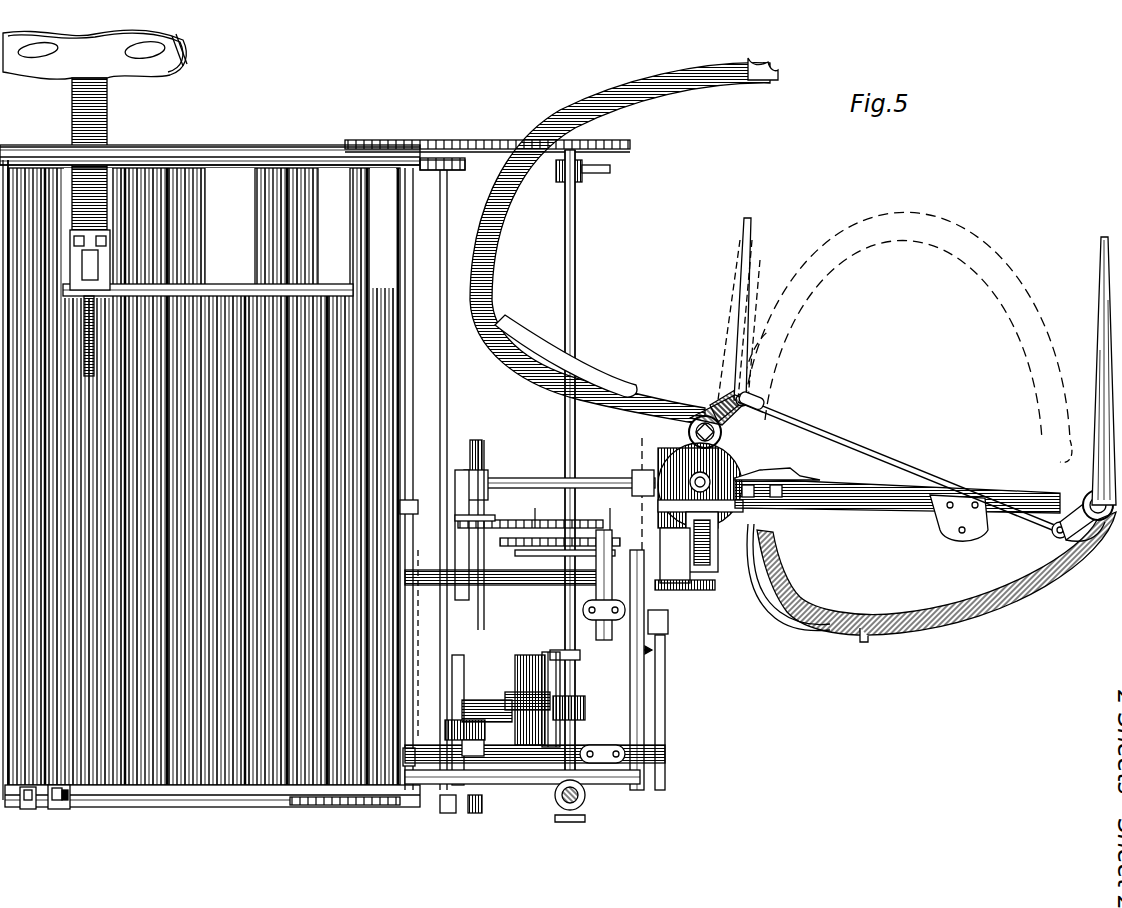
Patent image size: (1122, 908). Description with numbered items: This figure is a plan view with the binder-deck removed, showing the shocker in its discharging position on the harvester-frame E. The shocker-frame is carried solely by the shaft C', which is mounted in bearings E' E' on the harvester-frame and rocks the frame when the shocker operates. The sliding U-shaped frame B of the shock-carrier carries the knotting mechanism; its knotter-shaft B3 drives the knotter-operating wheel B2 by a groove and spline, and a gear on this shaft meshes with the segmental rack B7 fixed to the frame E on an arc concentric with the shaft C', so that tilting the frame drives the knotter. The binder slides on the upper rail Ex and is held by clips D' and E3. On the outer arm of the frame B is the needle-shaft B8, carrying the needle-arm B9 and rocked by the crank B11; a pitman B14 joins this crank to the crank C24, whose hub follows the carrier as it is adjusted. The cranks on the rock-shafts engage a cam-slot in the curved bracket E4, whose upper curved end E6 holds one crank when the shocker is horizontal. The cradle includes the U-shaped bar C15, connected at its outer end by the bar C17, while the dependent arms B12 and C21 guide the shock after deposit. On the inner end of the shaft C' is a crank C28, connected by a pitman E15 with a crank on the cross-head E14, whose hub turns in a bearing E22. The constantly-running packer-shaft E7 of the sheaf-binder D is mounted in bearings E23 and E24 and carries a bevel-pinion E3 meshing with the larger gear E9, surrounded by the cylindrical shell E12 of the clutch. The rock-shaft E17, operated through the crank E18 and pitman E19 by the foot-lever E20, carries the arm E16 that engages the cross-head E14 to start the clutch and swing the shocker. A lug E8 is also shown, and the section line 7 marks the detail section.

The rock-shaft E17 is at (242, 800).
The bell-crank lever E20 is at (100, 228).
The pitman E19 is at (40, 792).
The crank E18 is at (64, 806).
The upper rail Ex is at (414, 378).
The bearing E24 is at (584, 174).
The packer-shaft E7 is at (576, 262).
The U-shaped bar C15 is at (480, 232).
The bar C17 is at (780, 64).
The dependent arm C21 is at (740, 240).
The crank C24 is at (730, 418).
The bearings E' is at (557, 463).
The U-shaped frame B is at (880, 512).
The knotter-shaft B3 is at (755, 510).
The pitman B14 is at (858, 448).
The needle-shaft B8 is at (1088, 496).
The dependent arm B12 is at (1100, 300).
The needle-arm B9 is at (990, 605).
The crank B11 is at (1080, 542).
The segmental rack B7 is at (756, 600).
The knotter-operating wheel B2 is at (712, 535).
The bracket E4 is at (705, 580).
The curved end portion of cam-slot E6 is at (672, 600).
The section line 7 is at (643, 550).
The shaft C' is at (502, 470).
The crank C28 is at (445, 485).
The pitman E15 is at (448, 556).
The harvester-frame E is at (505, 609).
The lug E8 is at (580, 660).
The sheaf-binder D is at (662, 670).
The clip D' is at (413, 658).
The cross-head E14 is at (462, 690).
The cylindrical shell E12 is at (520, 672).
The gear E9 is at (545, 660).
The bearing E23 is at (562, 712).
The bevel-pinion E3 is at (666, 756).
The bearing E22 is at (470, 740).
The arm E16 is at (448, 812).